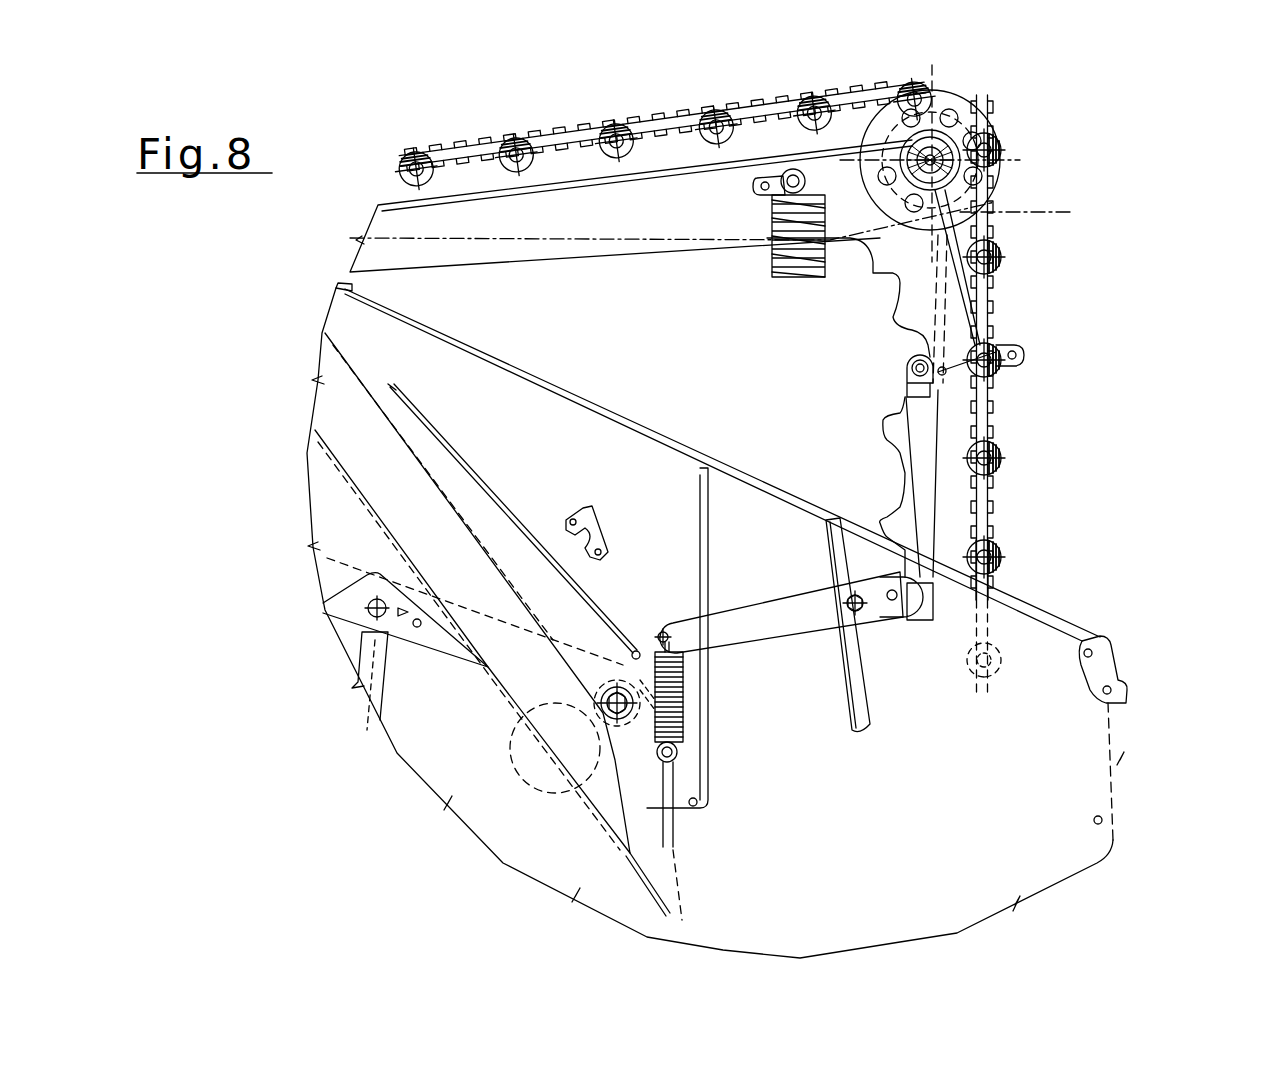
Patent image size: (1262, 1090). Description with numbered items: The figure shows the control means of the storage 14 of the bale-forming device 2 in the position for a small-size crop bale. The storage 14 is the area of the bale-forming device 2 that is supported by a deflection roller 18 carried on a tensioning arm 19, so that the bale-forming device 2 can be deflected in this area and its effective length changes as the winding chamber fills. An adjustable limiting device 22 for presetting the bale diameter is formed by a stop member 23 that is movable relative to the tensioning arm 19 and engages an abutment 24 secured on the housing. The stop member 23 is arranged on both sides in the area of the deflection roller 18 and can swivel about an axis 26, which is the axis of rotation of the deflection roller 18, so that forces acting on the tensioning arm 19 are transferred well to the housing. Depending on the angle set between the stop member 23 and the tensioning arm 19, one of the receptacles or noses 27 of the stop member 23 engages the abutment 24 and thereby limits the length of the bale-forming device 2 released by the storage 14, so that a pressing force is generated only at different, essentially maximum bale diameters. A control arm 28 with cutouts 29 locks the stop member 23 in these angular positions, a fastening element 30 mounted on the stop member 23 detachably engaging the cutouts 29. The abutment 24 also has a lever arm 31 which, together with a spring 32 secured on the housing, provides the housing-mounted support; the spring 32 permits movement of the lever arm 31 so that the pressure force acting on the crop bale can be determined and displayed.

The bale-forming device 2 is at (1003, 526).
The storage 14 is at (1045, 193).
The deflection roller 18 is at (960, 93).
The tensioning arm 19 is at (693, 210).
The adjustable limiting device 22 is at (943, 723).
The stop member 23 is at (1000, 478).
The abutment 24 is at (892, 637).
The axis 26 is at (1070, 212).
The receptacles (noses) 27 is at (905, 372).
The control arm 28 is at (893, 273).
The cutouts 29 is at (1020, 355).
The fastening element 30 is at (893, 405).
The lever arm 31 is at (755, 625).
The spring 32 is at (683, 722).